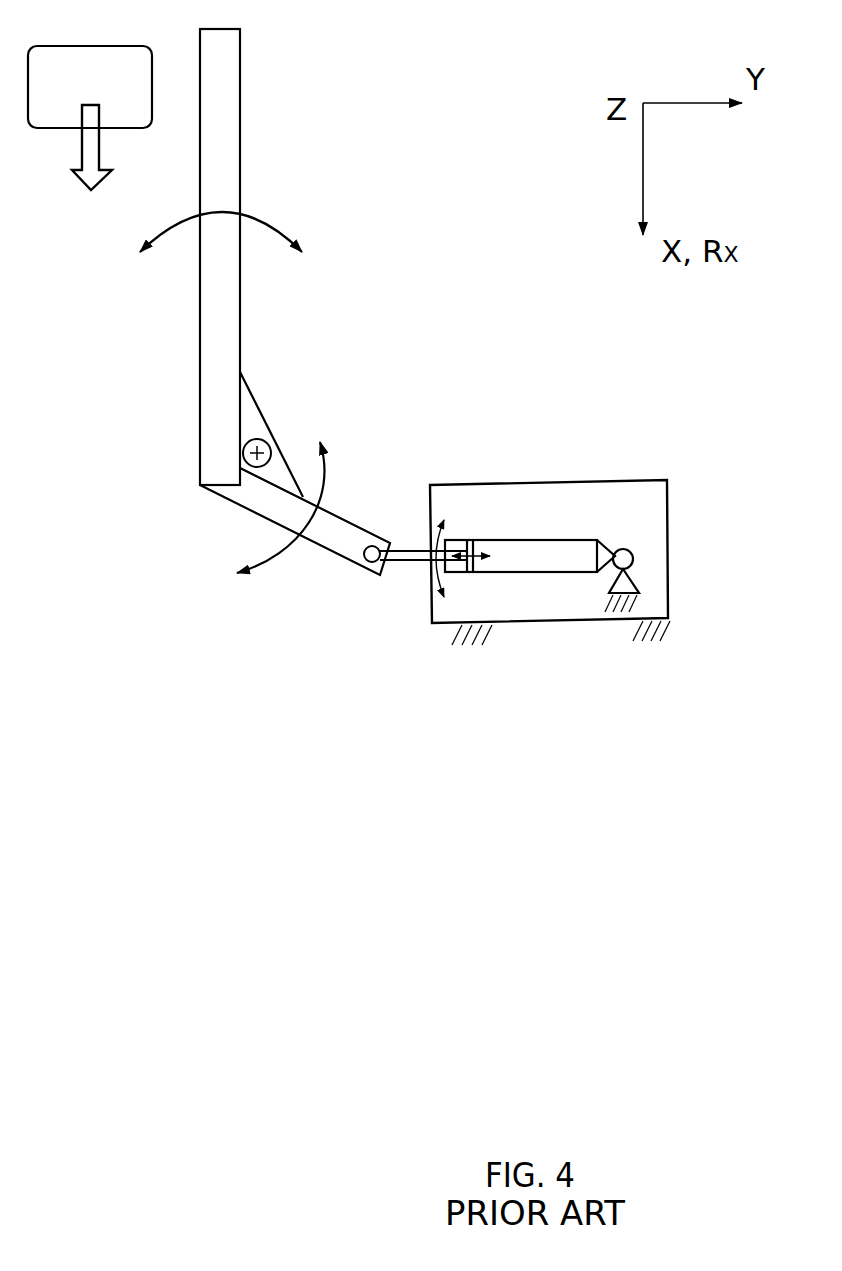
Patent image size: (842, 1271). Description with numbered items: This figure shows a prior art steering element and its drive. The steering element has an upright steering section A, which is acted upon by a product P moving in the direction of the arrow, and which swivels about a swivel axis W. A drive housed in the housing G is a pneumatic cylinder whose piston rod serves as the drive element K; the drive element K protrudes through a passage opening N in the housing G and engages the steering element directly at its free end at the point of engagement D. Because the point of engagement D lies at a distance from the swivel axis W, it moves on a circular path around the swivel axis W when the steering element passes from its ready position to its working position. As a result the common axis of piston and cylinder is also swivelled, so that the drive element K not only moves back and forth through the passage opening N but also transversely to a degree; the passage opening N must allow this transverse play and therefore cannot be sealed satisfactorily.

The steering section A is at (229, 93).
The product P is at (90, 118).
The swivel axis of a steering element W is at (265, 448).
The point of engagement D is at (370, 546).
The drive element K is at (413, 552).
The housing G is at (577, 482).
The passage opening N is at (425, 567).